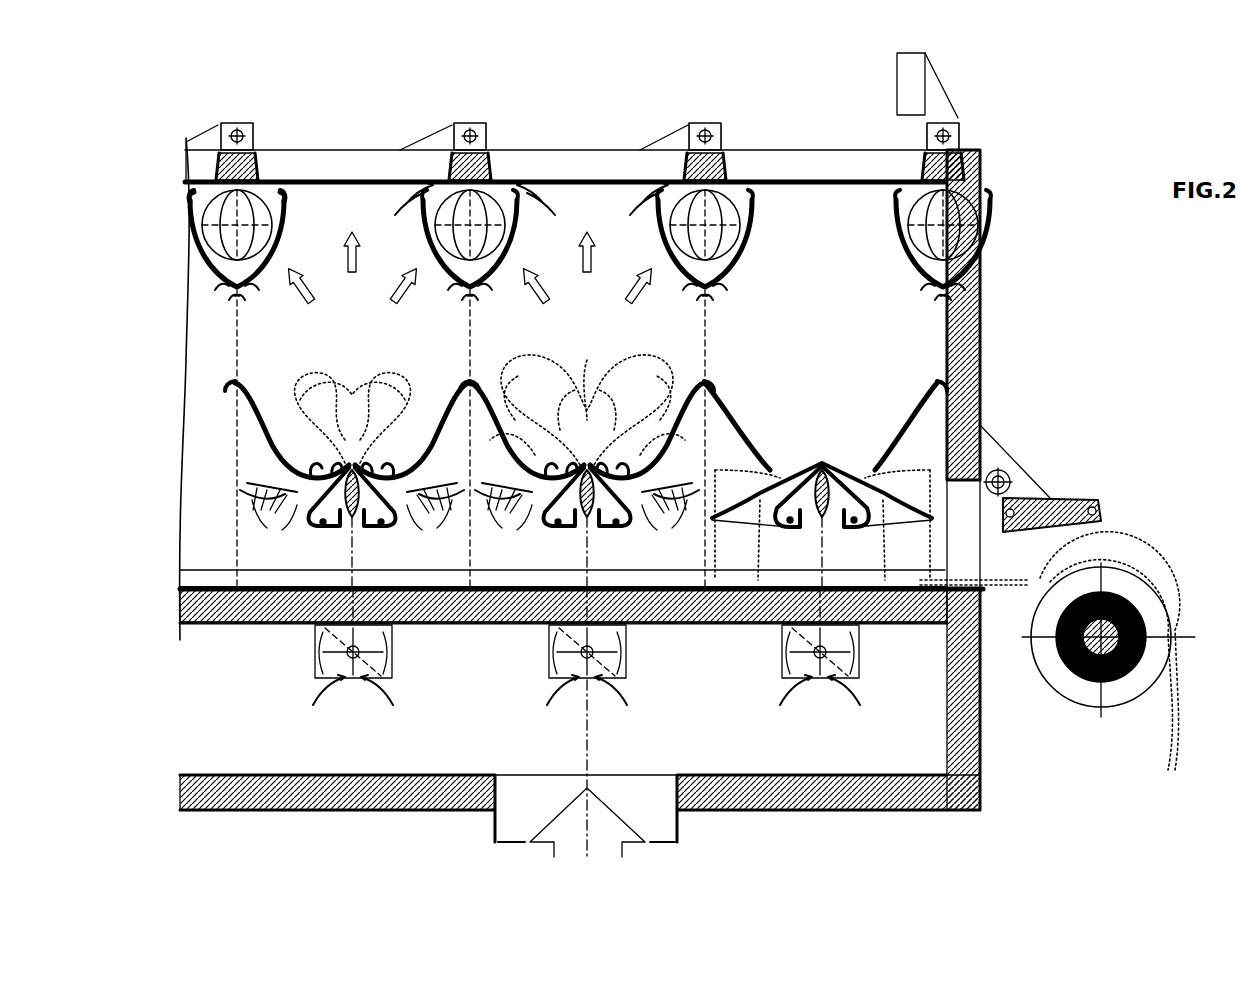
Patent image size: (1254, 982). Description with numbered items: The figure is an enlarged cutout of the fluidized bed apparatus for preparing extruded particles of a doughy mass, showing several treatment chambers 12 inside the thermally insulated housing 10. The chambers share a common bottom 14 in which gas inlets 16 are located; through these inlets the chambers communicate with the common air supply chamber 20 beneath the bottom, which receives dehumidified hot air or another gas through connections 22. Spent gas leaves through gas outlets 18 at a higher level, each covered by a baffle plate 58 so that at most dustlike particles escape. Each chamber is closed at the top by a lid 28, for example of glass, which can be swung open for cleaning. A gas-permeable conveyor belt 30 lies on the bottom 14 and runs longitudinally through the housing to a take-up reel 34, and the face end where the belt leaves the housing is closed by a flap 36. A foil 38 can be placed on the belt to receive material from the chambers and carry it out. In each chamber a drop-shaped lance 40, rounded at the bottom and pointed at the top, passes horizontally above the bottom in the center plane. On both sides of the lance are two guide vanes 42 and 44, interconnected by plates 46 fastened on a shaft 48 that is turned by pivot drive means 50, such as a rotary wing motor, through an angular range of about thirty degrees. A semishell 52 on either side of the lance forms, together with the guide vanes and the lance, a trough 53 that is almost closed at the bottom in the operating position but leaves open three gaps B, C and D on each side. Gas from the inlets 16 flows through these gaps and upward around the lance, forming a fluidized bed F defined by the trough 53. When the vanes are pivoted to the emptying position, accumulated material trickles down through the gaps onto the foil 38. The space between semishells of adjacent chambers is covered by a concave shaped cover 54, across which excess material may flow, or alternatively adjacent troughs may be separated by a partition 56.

The housing 10 is at (1000, 216).
The treatment chamber 12 is at (363, 305).
The bottom 14 is at (180, 615).
The gas inlet 16 is at (316, 678).
The gas outlet 18 is at (245, 210).
The air supply chamber 20 is at (465, 745).
The connection 22 is at (495, 845).
The lid 28 is at (352, 160).
The conveyor belt 30 is at (180, 586).
The take-up reel 34 is at (1095, 683).
The flap 36 is at (1060, 498).
The foil 38 is at (210, 570).
The lance 40 is at (824, 468).
The guide vane 42 is at (306, 517).
The guide vane 44 is at (272, 527).
The plate 46 is at (435, 527).
The shaft 48 is at (400, 517).
The pivot drive means 50 is at (182, 230).
The semishell 52 is at (725, 415).
The trough 53 is at (365, 442).
The shaped cover 54 is at (232, 383).
The partition 56 is at (236, 317).
The baffle plate 58 is at (182, 230).
The gap B is at (818, 470).
The gap C is at (776, 470).
The gap D is at (772, 472).
The fluidized bed F is at (553, 362).